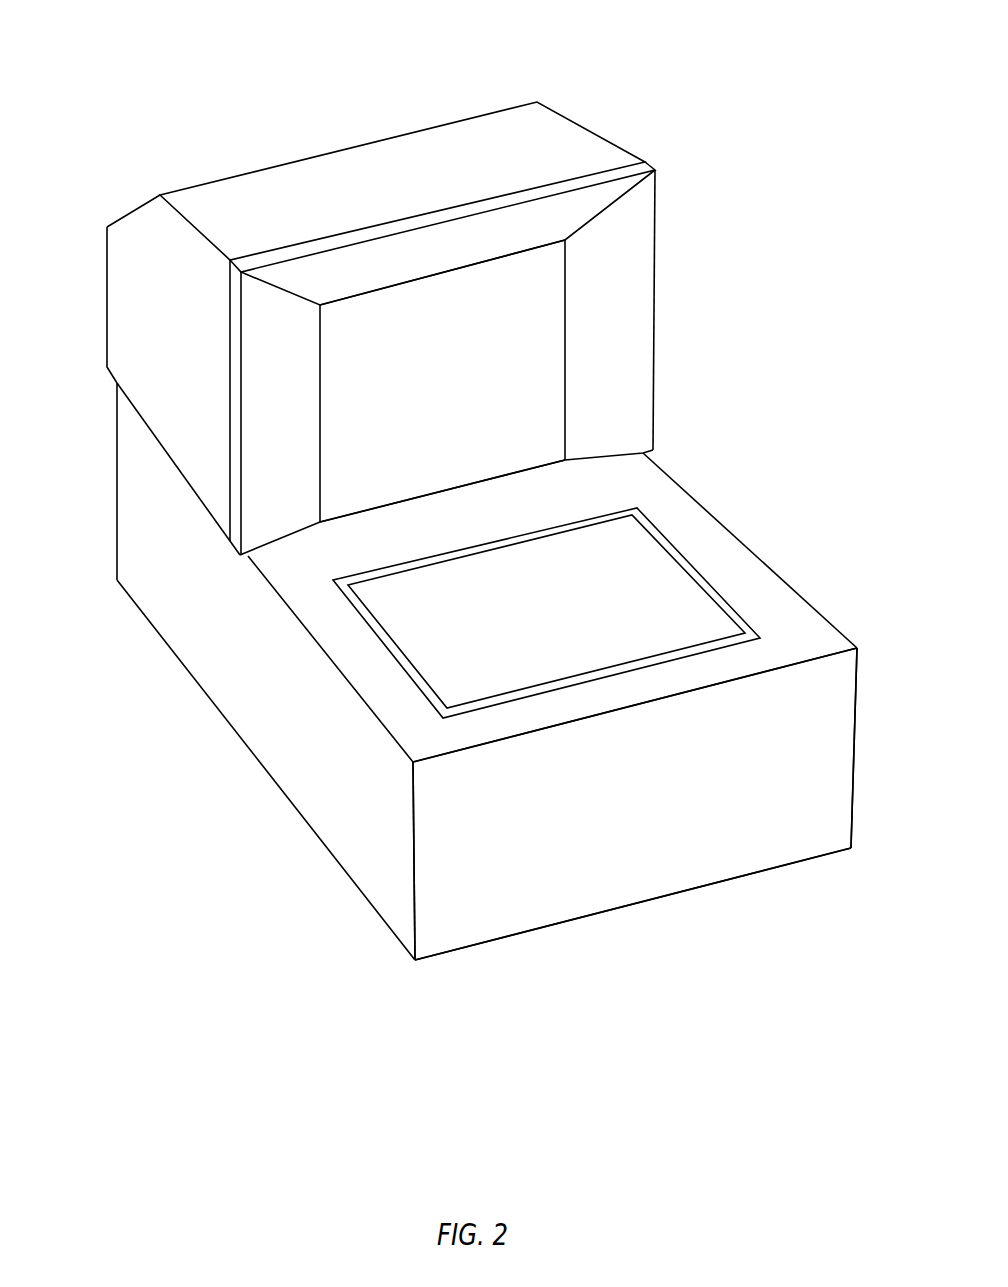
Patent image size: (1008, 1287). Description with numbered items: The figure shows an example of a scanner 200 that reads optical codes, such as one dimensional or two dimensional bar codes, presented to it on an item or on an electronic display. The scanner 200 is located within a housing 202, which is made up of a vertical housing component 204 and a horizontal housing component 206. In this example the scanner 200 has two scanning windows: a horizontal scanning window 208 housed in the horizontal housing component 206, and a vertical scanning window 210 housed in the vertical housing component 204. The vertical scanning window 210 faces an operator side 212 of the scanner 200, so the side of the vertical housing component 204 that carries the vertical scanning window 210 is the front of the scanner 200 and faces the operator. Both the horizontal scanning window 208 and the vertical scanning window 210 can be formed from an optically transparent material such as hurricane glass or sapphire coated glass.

The scanner 200 is at (258, 66).
The housing 202 is at (138, 522).
The vertical housing component 204 is at (557, 137).
The horizontal housing component 206 is at (688, 520).
The horizontal scanning window 208 is at (653, 605).
The vertical scanning window 210 is at (507, 327).
The operator side 212 is at (657, 757).